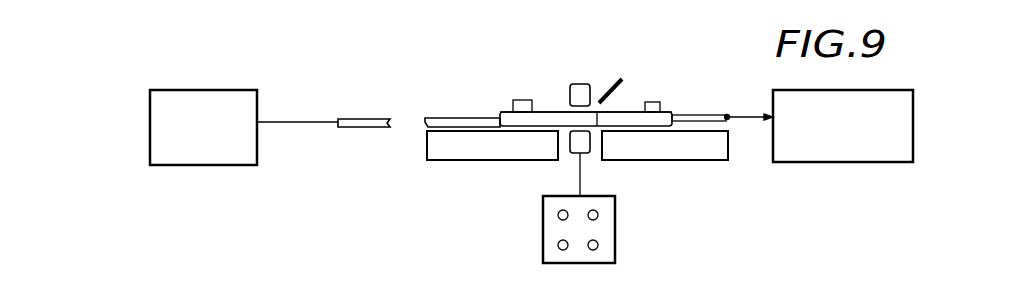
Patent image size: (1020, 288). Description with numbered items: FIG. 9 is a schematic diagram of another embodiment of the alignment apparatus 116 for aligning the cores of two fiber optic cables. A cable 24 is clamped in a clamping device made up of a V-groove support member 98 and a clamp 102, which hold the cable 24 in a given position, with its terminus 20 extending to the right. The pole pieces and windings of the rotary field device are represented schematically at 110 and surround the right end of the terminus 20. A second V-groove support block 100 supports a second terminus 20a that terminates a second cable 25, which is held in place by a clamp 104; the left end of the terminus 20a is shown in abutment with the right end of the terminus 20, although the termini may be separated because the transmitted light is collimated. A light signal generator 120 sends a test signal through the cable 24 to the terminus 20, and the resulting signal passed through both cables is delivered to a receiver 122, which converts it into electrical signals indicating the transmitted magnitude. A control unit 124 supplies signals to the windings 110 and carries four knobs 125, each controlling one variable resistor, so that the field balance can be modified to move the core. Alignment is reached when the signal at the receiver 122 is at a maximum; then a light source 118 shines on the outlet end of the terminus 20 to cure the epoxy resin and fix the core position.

The terminus 20 is at (570, 76).
The second terminus 20a is at (628, 108).
The cable 24 is at (372, 118).
The second cable 25 is at (730, 118).
The V-groove support member 98 is at (433, 155).
The second V-groove support block 100 is at (680, 160).
The clamp 102 is at (522, 100).
The clamp 104 is at (660, 100).
The pole pieces of the rotary field device 110 is at (580, 84).
The test arrangement 116 is at (380, 209).
The light source 118 is at (622, 79).
The light signal generator 120 is at (243, 155).
The receiver 122 is at (810, 153).
The control unit 124 is at (615, 247).
The knobs 125 is at (558, 215).